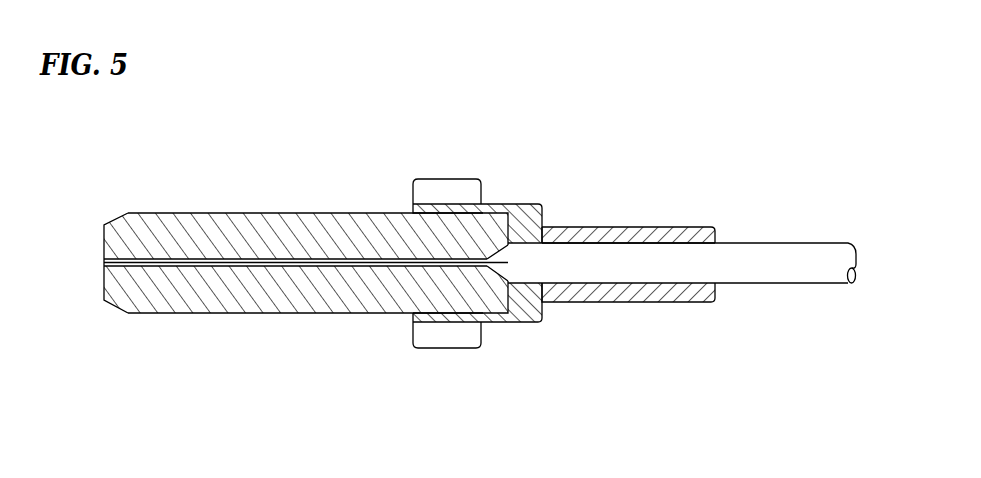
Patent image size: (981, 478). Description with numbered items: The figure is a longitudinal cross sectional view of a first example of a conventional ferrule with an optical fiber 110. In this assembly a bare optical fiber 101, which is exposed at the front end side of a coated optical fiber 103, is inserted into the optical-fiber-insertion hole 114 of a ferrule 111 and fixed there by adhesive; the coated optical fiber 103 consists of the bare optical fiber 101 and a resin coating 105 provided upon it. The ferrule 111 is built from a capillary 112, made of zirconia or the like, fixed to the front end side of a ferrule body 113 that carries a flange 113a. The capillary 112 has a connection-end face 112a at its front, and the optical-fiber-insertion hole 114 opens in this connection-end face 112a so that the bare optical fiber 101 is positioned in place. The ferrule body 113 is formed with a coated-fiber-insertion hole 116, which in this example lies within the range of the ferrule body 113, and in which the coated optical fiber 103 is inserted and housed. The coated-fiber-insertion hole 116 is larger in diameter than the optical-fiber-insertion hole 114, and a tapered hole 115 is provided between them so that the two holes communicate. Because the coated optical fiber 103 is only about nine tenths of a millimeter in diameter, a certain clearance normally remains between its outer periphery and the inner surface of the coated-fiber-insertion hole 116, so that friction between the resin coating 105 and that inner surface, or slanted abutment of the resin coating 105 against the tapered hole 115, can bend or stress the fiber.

The ferrule with an optical fiber 110 is at (717, 181).
The capillary 112 is at (213, 212).
The connection-end face 112a is at (104, 292).
The optical-fiber-insertion hole 114 is at (256, 259).
The bare optical fiber 101 is at (155, 263).
The tapered hole 115 is at (503, 272).
The flange 113a is at (455, 188).
The ferrule 111 is at (540, 330).
The ferrule body 113 is at (653, 227).
The resin coating 105 is at (641, 287).
The coated-fiber-insertion hole 116 is at (587, 246).
The coated optical fiber 103 is at (790, 278).